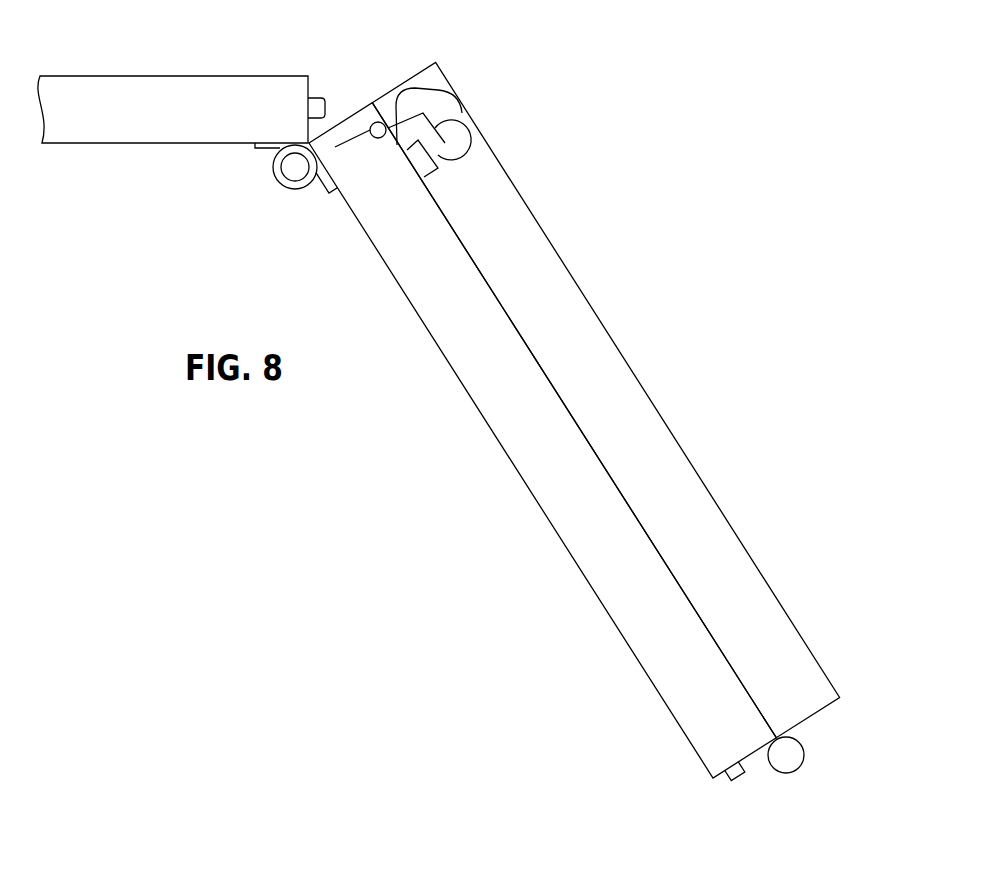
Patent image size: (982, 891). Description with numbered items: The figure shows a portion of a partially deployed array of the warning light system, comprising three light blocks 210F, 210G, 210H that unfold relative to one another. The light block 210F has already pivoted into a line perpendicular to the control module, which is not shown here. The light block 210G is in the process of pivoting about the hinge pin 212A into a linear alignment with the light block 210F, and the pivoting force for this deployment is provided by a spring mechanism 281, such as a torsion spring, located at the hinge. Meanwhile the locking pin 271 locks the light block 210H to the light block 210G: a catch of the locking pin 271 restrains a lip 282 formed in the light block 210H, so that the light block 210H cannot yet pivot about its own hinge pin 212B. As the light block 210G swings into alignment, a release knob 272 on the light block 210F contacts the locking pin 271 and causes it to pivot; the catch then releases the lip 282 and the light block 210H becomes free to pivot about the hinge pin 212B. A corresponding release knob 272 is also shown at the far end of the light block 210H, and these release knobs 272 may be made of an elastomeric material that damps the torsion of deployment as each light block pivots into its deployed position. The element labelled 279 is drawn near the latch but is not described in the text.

The light block 210F is at (175, 75).
The light block 210G is at (509, 460).
The light block 210H is at (638, 380).
The hinge pin 212A is at (297, 164).
The hinge pin 212B is at (787, 773).
The locking pin 271 is at (398, 123).
The release knob 272 is at (318, 97).
The spring 279 is at (462, 113).
The spring mechanism 281 is at (331, 194).
The lip 282 is at (463, 149).